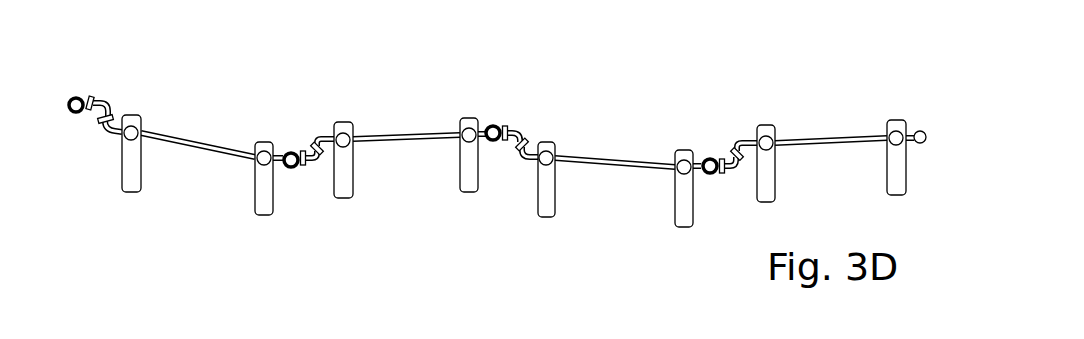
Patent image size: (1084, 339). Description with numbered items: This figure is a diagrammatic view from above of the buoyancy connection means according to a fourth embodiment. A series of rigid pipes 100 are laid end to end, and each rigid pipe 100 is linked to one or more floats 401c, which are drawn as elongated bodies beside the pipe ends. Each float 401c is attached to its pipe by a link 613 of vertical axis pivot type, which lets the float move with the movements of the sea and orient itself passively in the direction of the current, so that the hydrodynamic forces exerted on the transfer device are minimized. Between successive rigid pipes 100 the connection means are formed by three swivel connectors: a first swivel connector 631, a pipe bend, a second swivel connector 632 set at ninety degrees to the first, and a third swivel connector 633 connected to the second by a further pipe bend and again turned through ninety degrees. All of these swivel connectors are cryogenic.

The rigid pipe 100 is at (191, 141).
The float 401c is at (255, 212).
The link of vertical axis pivot type 613 is at (453, 148).
The first swivel connector 631 is at (319, 161).
The second swivel connector 632 is at (301, 174).
The third swivel connector 633 is at (288, 170).